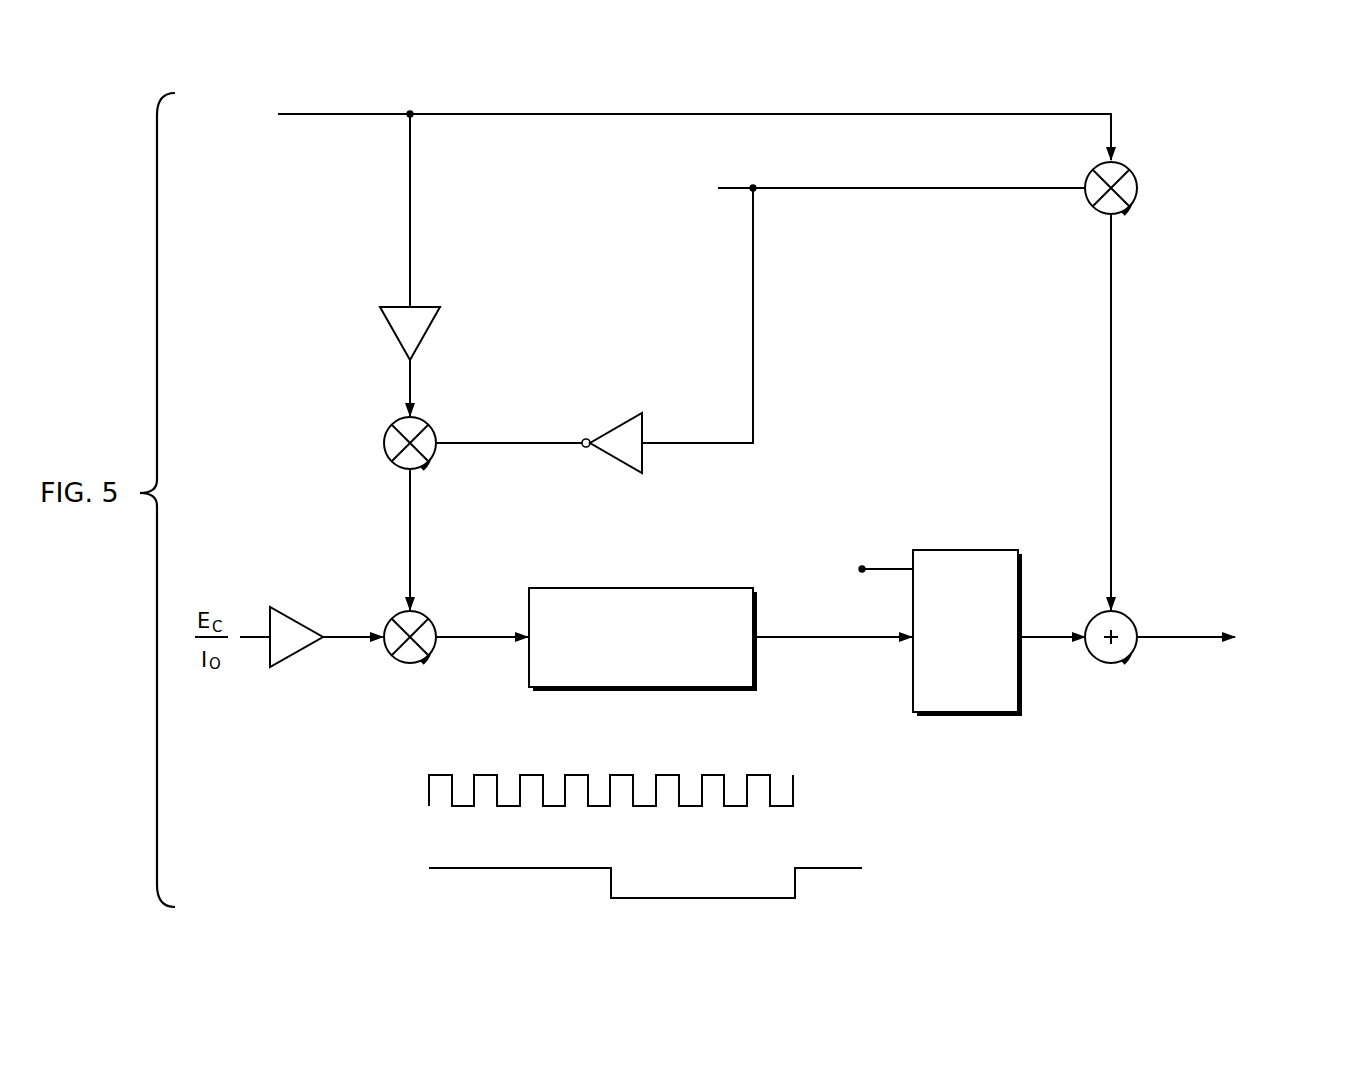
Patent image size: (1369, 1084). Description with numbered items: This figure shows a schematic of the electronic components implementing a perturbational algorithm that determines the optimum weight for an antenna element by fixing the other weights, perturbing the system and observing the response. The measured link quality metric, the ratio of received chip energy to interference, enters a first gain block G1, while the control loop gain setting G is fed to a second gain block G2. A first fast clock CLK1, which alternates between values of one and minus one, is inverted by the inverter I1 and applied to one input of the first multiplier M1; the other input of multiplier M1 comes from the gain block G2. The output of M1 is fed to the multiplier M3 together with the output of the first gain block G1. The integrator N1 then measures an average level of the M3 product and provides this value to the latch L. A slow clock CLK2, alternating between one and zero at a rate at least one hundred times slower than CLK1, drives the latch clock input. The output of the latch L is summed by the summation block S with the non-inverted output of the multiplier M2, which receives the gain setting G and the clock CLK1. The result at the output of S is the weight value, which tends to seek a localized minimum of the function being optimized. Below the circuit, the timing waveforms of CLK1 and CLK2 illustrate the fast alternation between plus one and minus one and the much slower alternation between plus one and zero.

The control loop gain setting G is at (680, 205).
The first gain block G1 is at (325, 622).
The second gain block G2 is at (422, 361).
The first multiplier M1 is at (428, 420).
The multiplier M2 is at (1133, 180).
The multiplier M3 is at (424, 614).
The inverter I1 is at (594, 330).
The integrator N1 is at (720, 625).
The latch L is at (999, 617).
The summation block S is at (1205, 625).
The first fast clock CLK1 is at (714, 496).
The slow clock CLK2 is at (628, 733).